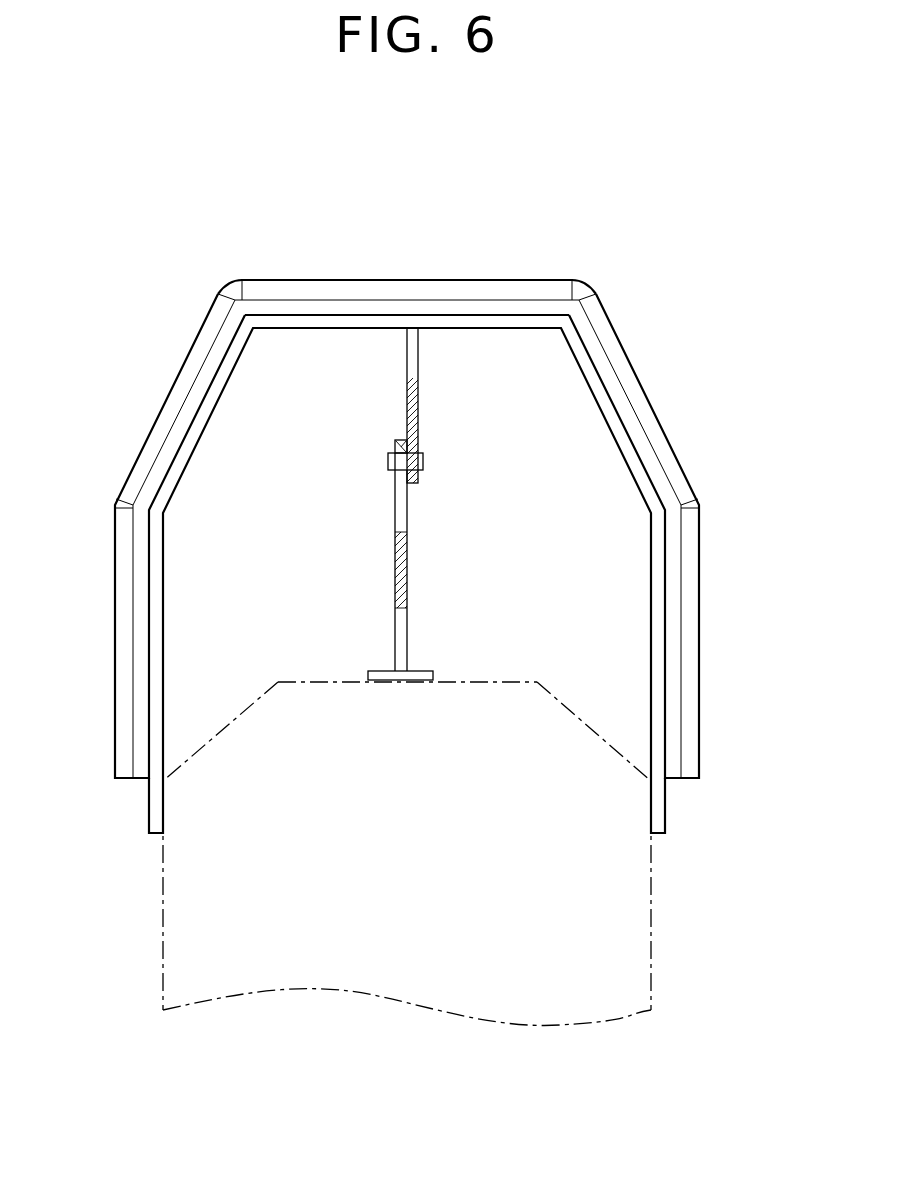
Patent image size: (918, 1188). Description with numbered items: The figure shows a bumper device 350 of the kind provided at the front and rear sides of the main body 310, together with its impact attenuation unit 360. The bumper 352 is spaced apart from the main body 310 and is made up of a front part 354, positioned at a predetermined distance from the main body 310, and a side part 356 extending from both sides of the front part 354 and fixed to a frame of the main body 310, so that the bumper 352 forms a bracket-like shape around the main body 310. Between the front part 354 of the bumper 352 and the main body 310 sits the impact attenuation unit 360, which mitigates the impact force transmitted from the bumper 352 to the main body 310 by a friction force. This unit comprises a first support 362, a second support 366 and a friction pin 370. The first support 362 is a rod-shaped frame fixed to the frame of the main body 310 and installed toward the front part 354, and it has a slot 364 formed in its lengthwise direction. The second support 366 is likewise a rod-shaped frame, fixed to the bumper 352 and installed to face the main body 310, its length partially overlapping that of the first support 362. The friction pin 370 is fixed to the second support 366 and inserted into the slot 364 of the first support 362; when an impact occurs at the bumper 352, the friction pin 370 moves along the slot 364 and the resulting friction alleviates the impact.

The main body 310 is at (163, 893).
The bumper device 350 is at (577, 168).
The bumper 352 is at (337, 206).
The front part 354 is at (305, 305).
The side part 356 is at (123, 563).
The impact attenuation unit 360 is at (472, 499).
The first support 362 is at (400, 632).
The slot 364 is at (400, 510).
The second support 366 is at (413, 400).
The friction pin 370 is at (390, 462).